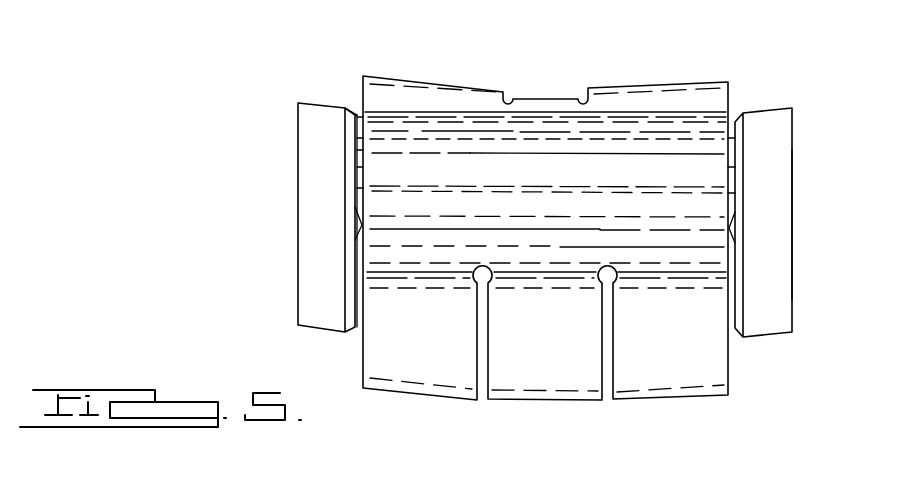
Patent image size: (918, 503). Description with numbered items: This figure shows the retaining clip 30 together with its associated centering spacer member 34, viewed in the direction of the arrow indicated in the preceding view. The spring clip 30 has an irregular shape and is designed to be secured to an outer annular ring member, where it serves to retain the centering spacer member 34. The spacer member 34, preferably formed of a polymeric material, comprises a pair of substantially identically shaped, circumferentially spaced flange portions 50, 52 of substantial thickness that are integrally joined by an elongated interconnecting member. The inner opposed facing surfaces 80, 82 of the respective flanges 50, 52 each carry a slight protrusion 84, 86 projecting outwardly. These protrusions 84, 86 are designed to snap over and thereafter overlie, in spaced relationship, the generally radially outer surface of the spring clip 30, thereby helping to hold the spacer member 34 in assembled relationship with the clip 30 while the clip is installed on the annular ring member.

The retaining clip 30 is at (730, 93).
The centering spacer member 34 is at (800, 195).
The flange portion 50 is at (783, 122).
The flange portion 52 is at (300, 154).
The inner opposed facing surface 80 is at (733, 154).
The inner opposed facing surface 82 is at (356, 153).
The protrusion 84 is at (735, 215).
The protrusion 86 is at (355, 210).